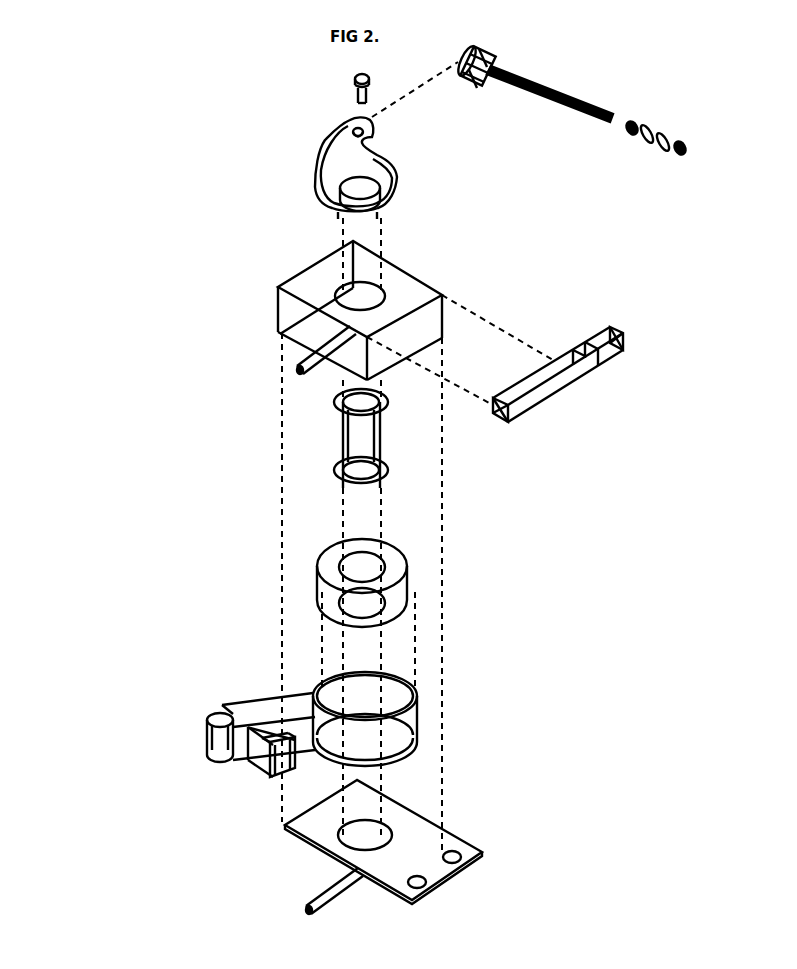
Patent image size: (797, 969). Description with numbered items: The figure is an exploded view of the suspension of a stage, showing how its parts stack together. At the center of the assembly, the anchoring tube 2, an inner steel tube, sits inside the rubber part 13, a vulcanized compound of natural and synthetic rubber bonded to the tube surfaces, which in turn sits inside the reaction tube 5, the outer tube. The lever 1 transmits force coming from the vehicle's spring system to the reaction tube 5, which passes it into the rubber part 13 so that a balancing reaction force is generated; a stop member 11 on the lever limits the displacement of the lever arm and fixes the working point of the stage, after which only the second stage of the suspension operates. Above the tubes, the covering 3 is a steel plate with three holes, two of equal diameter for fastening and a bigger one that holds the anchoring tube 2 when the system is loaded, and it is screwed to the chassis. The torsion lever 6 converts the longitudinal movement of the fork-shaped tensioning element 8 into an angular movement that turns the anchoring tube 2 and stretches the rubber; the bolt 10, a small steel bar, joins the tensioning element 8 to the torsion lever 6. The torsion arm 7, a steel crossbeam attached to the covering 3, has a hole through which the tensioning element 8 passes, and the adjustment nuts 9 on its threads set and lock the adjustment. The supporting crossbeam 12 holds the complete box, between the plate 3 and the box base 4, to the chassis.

The lever 1 is at (214, 701).
The anchoring tube 2 is at (341, 451).
The covering 3 is at (266, 292).
The box base 4 is at (473, 851).
The reaction tube 5 is at (427, 705).
The torsion lever 6 is at (313, 137).
The torsion arm 7 is at (566, 395).
The fork-shaped tensioning element 8 is at (581, 83).
The adjustment nuts 9 is at (695, 148).
The bolt 10 is at (348, 84).
The stop member 11 is at (260, 776).
The supporting crossbeam 12 is at (294, 357).
The rubber part 13 is at (415, 563).